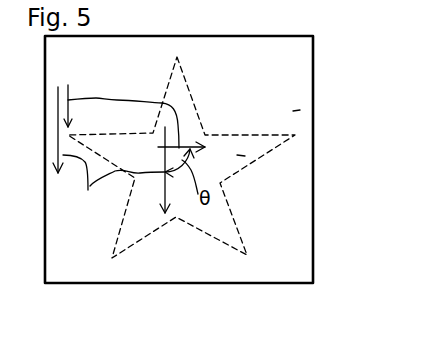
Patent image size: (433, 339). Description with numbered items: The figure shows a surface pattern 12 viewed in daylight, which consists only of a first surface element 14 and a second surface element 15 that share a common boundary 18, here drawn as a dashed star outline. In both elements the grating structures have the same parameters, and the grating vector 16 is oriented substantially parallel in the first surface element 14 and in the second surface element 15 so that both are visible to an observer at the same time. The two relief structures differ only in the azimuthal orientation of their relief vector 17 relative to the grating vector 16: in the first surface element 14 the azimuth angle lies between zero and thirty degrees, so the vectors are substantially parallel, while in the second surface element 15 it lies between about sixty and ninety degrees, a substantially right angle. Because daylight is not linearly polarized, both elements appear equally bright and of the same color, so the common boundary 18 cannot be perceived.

The surface pattern 12 is at (320, 88).
The first surface element 14 is at (293, 111).
The second surface element 15 is at (237, 155).
The grating vector 16 is at (88, 190).
The relief vector 17 is at (96, 98).
The common boundary 18 is at (283, 141).